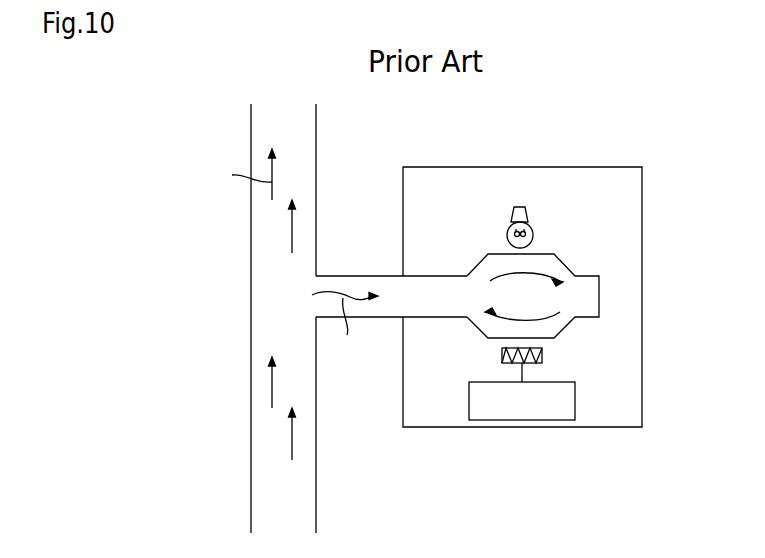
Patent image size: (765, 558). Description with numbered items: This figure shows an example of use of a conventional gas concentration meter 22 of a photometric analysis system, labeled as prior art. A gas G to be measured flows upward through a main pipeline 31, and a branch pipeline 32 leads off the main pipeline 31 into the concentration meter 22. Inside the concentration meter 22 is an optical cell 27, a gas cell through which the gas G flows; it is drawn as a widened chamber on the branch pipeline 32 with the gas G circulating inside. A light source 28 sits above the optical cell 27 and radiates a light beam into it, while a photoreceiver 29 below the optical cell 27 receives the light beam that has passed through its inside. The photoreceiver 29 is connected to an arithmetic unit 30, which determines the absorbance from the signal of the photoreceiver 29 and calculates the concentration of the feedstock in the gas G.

The concentration meter 22 is at (607, 270).
The optical cell 27 is at (564, 262).
The light source 28 is at (533, 231).
The photoreceiver 29 is at (544, 355).
The arithmetic unit 30 is at (577, 398).
The main pipeline 31 is at (316, 158).
The branch pipeline 32 is at (362, 276).
The gas to be measured G is at (296, 258).